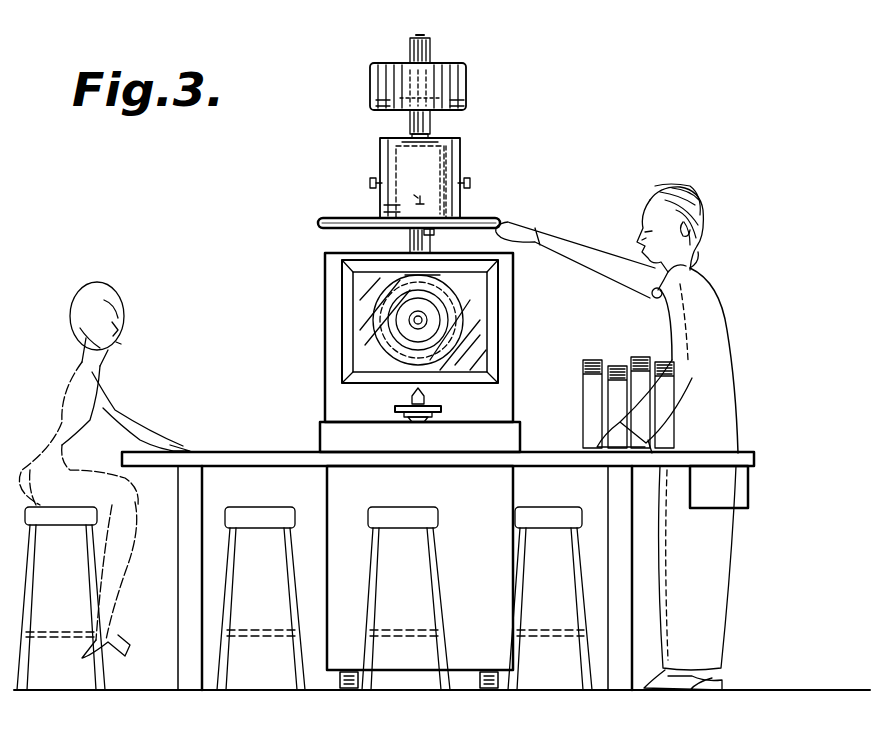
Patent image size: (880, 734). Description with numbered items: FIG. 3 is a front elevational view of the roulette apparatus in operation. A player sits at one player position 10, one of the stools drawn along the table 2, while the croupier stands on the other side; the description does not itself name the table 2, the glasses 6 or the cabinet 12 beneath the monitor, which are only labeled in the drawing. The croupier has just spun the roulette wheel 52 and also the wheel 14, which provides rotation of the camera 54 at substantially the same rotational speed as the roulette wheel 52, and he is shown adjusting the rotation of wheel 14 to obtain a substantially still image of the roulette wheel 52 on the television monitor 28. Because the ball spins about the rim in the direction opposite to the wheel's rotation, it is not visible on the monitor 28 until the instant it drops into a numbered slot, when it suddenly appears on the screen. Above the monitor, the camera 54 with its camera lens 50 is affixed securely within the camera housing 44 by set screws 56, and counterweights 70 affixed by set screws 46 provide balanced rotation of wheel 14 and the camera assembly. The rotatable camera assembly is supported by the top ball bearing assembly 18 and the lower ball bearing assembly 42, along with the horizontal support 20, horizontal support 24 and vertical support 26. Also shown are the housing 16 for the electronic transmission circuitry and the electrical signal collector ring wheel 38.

The bar/counter 2 is at (247, 450).
The glasses 6 is at (620, 386).
The player position 10 is at (385, 516).
The cabinet housing 12 is at (500, 445).
The wheel 14 is at (490, 218).
The housing 16 is at (455, 82).
The top ball bearing assembly 18 is at (410, 44).
The horizontal support 20 is at (430, 48).
The horizontal support 24 is at (410, 122).
The vertical support 26 is at (410, 242).
The television monitor 28 is at (470, 358).
The electrical signal collector ring wheel 38 is at (450, 114).
The lower ball bearing assembly 42 is at (430, 136).
The camera housing 44 is at (400, 158).
The set screws 46 is at (426, 203).
The camera lens 50 is at (434, 233).
The roulette wheel 52 is at (452, 312).
The camera 54 is at (446, 165).
The set screws 56 is at (370, 184).
The counterweights 70 is at (384, 208).